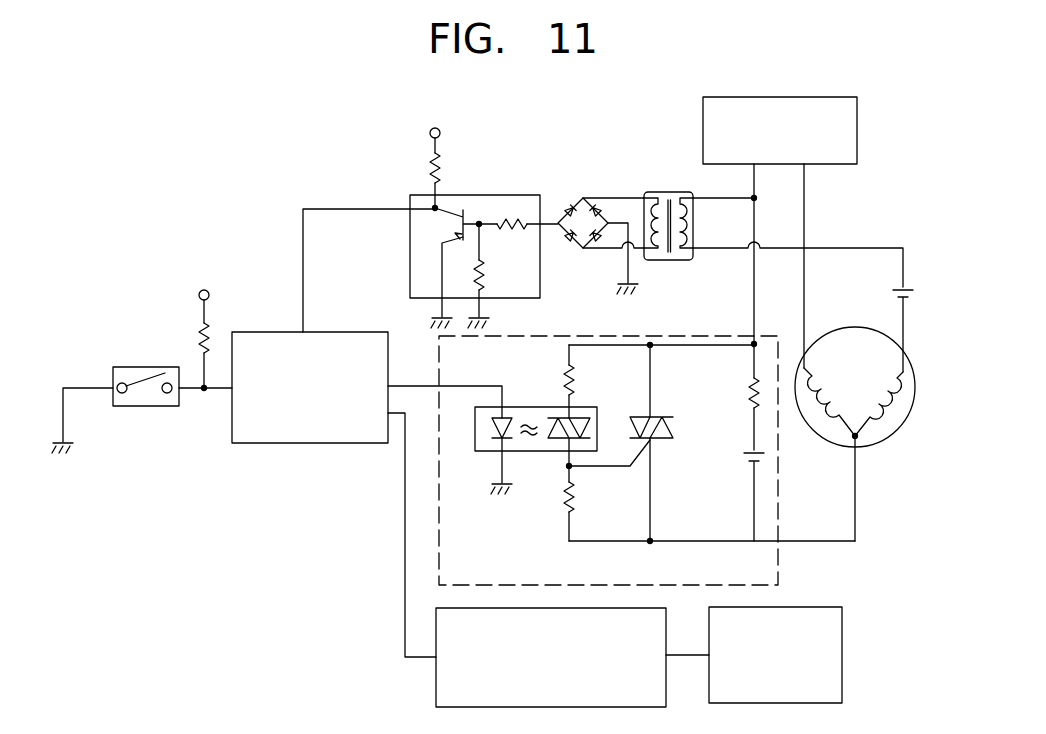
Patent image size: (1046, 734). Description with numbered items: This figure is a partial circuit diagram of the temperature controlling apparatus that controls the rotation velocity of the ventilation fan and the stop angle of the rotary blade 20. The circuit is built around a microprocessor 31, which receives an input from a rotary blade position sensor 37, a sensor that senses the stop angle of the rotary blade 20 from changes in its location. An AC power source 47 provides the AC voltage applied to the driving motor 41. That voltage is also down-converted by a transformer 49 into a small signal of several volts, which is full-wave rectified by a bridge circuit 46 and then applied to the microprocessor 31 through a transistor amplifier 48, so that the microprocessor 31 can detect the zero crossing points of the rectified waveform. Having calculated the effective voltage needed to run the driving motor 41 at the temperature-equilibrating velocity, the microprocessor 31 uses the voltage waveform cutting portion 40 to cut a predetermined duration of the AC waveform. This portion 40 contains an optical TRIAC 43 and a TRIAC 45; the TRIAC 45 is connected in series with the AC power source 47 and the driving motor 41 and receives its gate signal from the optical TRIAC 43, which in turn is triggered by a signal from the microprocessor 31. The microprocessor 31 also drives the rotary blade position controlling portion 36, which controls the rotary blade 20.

The rotary blade 20 is at (842, 690).
The microprocessor 31 is at (283, 445).
The rotary blade position controlling portion 36 is at (436, 685).
The rotary blade position sensor 37 is at (140, 410).
The voltage waveform cutting portion 40 is at (782, 568).
The driving motor 41 is at (875, 445).
The optical TRIAC 43 is at (492, 453).
The TRIAC 45 is at (657, 442).
The bridge circuit 46 is at (582, 197).
The AC power source 47 is at (859, 131).
The transistor amplifier 48 is at (480, 193).
The transformer 49 is at (656, 190).